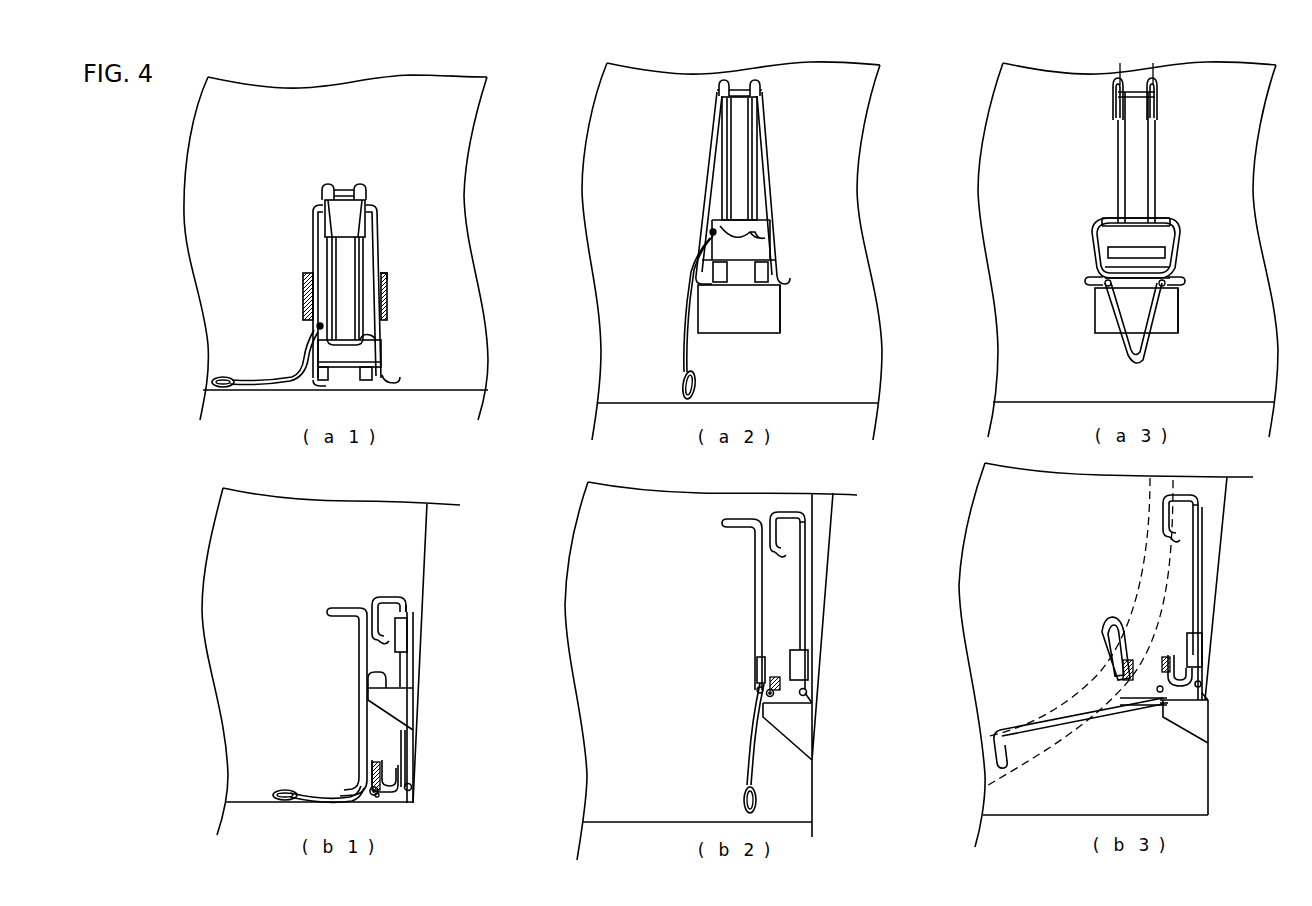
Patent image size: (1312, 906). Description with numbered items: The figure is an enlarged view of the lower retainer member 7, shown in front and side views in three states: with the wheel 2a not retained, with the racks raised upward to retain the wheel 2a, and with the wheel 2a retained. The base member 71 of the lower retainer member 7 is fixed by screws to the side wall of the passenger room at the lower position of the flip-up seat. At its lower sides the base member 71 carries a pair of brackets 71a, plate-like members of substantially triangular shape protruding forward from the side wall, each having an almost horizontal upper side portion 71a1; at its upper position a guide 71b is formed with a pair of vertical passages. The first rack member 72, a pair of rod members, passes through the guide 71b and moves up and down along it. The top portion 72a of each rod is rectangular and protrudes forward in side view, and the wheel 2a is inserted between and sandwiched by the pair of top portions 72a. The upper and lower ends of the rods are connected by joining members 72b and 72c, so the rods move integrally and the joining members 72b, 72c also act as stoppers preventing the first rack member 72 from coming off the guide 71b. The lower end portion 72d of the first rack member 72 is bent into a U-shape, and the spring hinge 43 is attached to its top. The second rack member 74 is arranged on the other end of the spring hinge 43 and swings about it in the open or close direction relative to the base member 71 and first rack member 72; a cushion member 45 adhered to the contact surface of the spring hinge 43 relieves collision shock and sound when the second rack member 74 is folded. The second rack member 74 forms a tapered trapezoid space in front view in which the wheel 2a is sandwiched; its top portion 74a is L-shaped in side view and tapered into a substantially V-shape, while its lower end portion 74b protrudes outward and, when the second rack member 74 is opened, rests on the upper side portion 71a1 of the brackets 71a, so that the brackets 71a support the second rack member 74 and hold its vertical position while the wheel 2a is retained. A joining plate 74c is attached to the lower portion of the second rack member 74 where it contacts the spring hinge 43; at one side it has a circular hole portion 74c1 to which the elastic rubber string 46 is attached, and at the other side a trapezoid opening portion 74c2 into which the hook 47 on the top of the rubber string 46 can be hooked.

The wheel 2a is at (1110, 183).
The lower retainer member 7 is at (390, 153).
The spring hinge 43 is at (352, 377).
The cushion member 45 is at (1170, 250).
The rubber string 46 is at (277, 383).
The hook 47 is at (226, 376).
The base member 71 is at (343, 290).
The brackets 71a is at (386, 297).
The upper side portion 71a1 is at (381, 273).
The guide 71b is at (350, 217).
The first rack member 72 is at (358, 250).
The top portion 72a is at (328, 186).
The joining member 72b is at (1118, 96).
The joining member 72c is at (413, 788).
The lower end portion 72d is at (395, 795).
The second rack member 74 is at (370, 250).
The top portion 74a is at (348, 188).
The lower end portion 74b is at (398, 380).
The joining plate 74c is at (362, 355).
The circular hole portion 74c1 is at (318, 330).
The trapezoid opening portion 74c2 is at (373, 340).